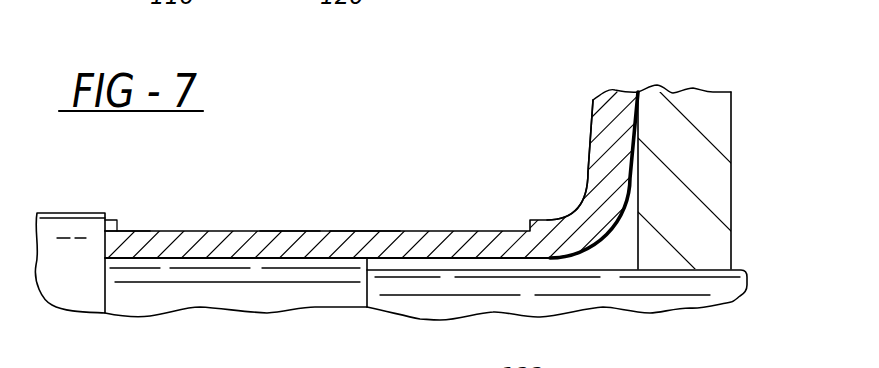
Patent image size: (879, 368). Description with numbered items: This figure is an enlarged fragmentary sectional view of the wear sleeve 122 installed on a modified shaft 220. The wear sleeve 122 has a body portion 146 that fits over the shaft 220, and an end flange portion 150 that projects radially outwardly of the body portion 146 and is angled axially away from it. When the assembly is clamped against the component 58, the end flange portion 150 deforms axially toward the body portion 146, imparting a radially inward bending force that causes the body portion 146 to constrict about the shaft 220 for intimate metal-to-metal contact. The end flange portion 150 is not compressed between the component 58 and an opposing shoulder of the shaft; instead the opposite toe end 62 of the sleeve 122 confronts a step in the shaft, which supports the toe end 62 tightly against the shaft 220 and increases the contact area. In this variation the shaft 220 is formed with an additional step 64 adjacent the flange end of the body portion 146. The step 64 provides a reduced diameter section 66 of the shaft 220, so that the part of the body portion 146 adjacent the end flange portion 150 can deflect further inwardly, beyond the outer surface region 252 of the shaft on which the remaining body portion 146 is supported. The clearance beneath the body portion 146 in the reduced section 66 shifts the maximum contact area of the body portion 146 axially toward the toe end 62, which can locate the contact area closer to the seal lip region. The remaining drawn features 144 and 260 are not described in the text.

The component 58 is at (695, 103).
The toe end 62 is at (113, 221).
The additional step 64 is at (366, 261).
The reduced diameter section 66 is at (502, 260).
The wear sleeve 122 is at (590, 87).
The upper surface of strip 144 is at (355, 230).
The body portion 146 is at (225, 237).
The end flange portion 150 is at (600, 149).
The shaft 220 is at (273, 293).
The outer surface region of the shaft 252 is at (290, 238).
The strip end 260 is at (152, 234).